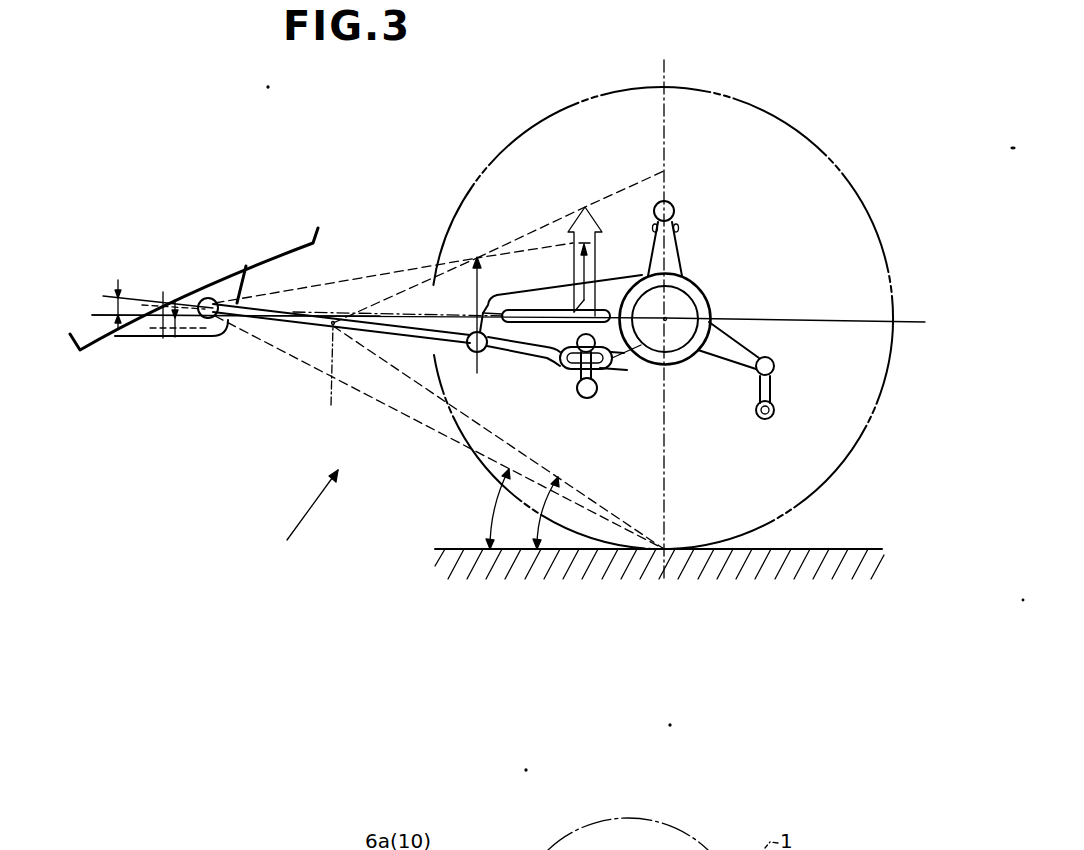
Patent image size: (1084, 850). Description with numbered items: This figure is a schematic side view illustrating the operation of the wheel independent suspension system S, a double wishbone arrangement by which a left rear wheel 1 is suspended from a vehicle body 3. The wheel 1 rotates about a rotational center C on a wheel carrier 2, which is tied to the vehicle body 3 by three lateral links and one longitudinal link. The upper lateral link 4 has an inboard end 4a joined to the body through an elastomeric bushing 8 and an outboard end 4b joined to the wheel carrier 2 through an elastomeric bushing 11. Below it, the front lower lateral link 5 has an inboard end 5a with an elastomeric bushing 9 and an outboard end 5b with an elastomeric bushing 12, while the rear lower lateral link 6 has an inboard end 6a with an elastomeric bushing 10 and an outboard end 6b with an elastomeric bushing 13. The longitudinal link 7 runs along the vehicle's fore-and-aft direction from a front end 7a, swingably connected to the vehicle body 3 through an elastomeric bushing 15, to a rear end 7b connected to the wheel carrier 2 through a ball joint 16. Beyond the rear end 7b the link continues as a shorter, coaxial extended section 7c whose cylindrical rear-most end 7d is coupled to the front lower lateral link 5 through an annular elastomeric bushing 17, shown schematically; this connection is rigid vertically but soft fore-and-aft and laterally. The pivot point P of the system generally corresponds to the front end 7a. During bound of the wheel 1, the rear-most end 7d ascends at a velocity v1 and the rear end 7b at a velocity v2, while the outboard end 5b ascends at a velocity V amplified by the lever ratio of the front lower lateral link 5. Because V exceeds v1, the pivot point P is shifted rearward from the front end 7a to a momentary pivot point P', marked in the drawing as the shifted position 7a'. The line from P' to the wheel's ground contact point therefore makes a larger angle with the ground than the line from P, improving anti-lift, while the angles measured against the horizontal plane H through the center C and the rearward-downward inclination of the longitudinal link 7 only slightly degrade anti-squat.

The left rear wheel 1 is at (812, 126).
The wheel carrier 2 is at (684, 272).
The vehicle body 3 is at (268, 268).
The upper lateral link 4 is at (675, 212).
The inboard end of upper lateral link 4a is at (717, 241).
The elastomeric bushing 8 is at (680, 230).
The outboard end of upper lateral link 4b is at (710, 192).
The elastomeric bushing 11 is at (672, 203).
The front lower lateral link 5 is at (596, 372).
The inboard end of front lower lateral link 5a is at (574, 424).
The elastomeric bushing 9 is at (586, 399).
The outboard end of front lower lateral link 5b is at (657, 379).
The elastomeric bushing 12 is at (595, 344).
The rear lower lateral link 6 is at (771, 390).
The inboard end of rear lower lateral link 6a is at (758, 436).
The elastomeric bushing 10 is at (768, 419).
The outboard end of rear lower lateral link 6b is at (808, 359).
The elastomeric bushing 13 is at (774, 364).
The longitudinal link 7 is at (403, 340).
The front end of longitudinal link 7a is at (209, 361).
The elastomeric bushing 15 is at (226, 332).
The shifted rod pivot position 7a' is at (327, 379).
The rear end of longitudinal link 7b is at (440, 406).
The ball joint 16 is at (474, 352).
The extended section 7c is at (516, 350).
The rear-most end 7d is at (608, 362).
The elastomeric bushing 17 is at (566, 369).
The pivot point P is at (204, 266).
The momentary pivot point P' is at (347, 279).
The horizontal plane H is at (100, 313).
The velocity V is at (600, 238).
The velocity v1 is at (596, 266).
The velocity v2 is at (477, 300).
The rotational center C is at (669, 317).
The wheel independent suspension system S is at (299, 517).